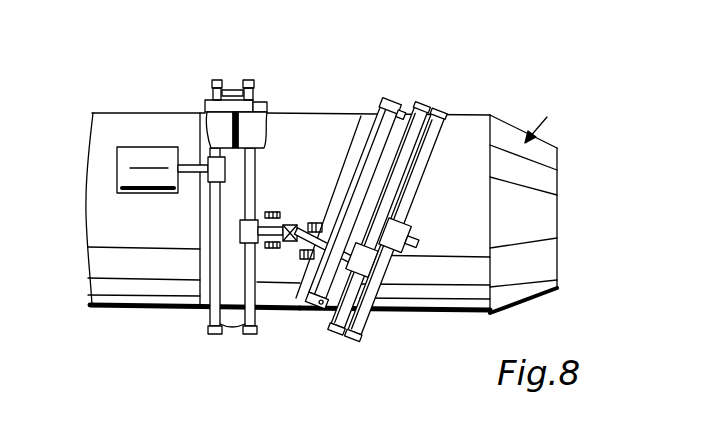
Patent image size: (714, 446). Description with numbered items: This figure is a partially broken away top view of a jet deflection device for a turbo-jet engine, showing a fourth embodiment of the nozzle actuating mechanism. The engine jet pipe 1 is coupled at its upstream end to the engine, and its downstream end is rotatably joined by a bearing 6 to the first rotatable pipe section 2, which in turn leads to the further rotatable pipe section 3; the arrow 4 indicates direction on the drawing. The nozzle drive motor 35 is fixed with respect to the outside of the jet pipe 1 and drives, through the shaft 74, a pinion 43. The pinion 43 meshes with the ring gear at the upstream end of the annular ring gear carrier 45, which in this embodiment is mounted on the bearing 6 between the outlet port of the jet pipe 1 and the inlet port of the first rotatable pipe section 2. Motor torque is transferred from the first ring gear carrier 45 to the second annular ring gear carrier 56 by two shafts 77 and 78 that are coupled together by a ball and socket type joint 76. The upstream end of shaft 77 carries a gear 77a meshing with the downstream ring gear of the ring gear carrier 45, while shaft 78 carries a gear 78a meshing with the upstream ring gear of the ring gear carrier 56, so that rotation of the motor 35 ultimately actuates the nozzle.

The engine jet pipe 1 is at (136, 126).
The pipe section 2 is at (310, 130).
The pipe section 3 is at (468, 138).
The feed direction arrow 4 is at (543, 119).
The bearing 6 is at (254, 101).
The nozzle drive motor 35 is at (145, 177).
The pinion 43 is at (220, 166).
The annular ring gear carrier 45 is at (226, 88).
The second annular ring gear carrier 56 is at (448, 118).
The shaft 74 is at (185, 174).
The ball and socket type joint 76 is at (290, 242).
The shaft 77 is at (288, 218).
The gear 77a is at (256, 218).
The shaft 78 is at (306, 285).
The gear 78a is at (378, 293).